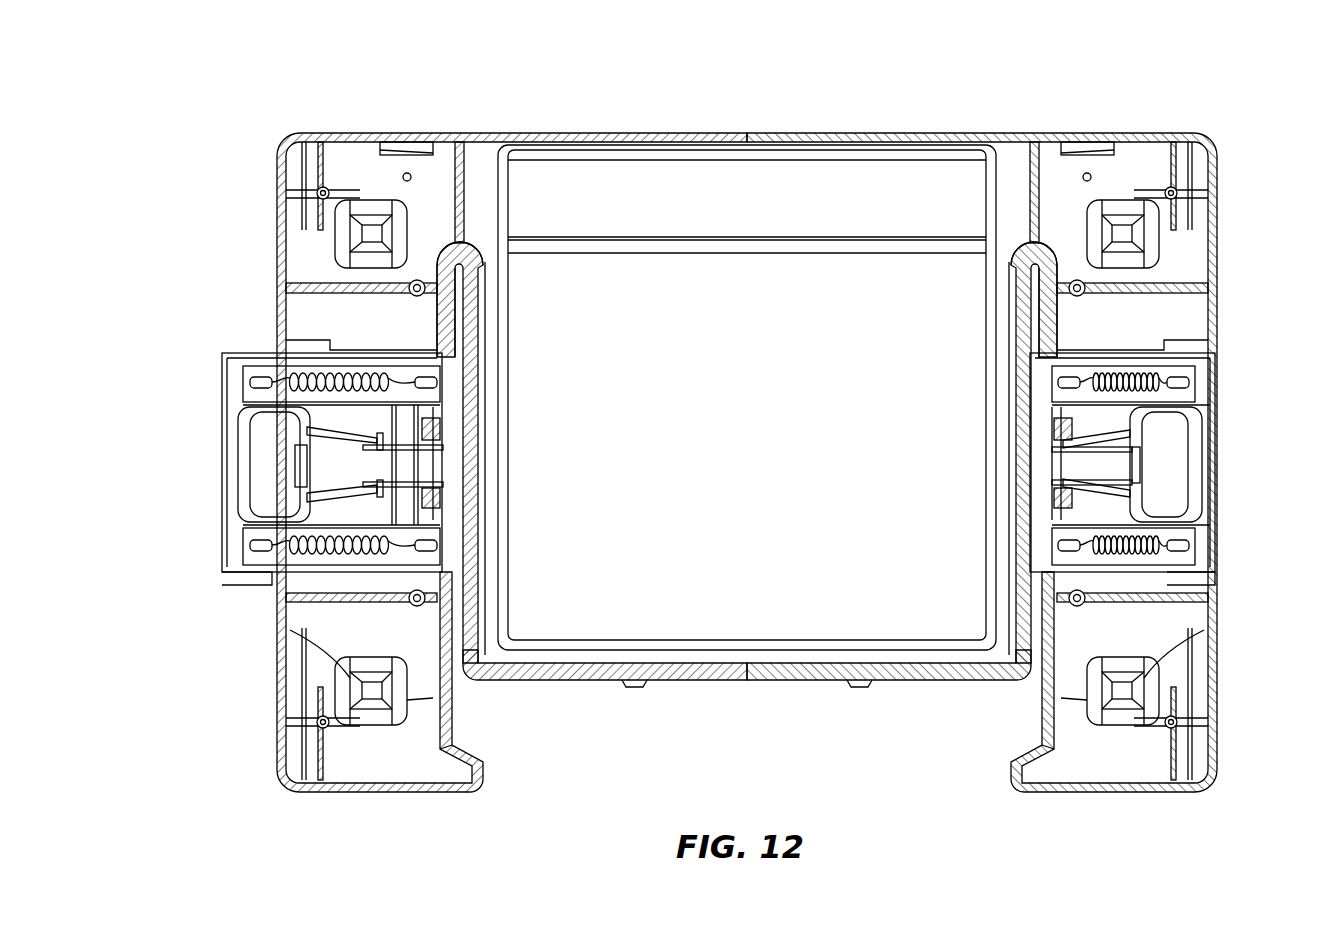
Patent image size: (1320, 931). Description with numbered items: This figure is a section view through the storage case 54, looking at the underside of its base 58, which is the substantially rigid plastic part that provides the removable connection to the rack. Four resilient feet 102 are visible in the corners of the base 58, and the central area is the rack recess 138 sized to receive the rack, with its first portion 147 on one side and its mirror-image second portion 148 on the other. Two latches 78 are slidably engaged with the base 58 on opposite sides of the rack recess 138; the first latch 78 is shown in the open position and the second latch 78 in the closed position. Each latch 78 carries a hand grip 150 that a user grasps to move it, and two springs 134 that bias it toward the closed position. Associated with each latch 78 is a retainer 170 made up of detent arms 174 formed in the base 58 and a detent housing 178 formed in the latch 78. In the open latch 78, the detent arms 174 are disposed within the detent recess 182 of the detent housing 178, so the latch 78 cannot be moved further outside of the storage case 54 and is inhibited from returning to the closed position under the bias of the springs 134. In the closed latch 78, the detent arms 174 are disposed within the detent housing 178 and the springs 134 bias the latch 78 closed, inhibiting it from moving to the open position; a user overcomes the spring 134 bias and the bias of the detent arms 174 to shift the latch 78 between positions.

The storage case 54 is at (824, 70).
The base 58 is at (612, 612).
The latch 78 is at (225, 385).
The resilient feet 102 is at (372, 232).
The spring 134 is at (333, 380).
The rack recess 138 is at (460, 278).
The first portion of the rack recess 147 is at (462, 305).
The second portion of the rack recess 148 is at (1030, 302).
The hand grip 150 is at (272, 447).
The retainer 170 is at (392, 497).
The detent arms 174 is at (398, 447).
The detent housing 178 is at (315, 478).
The detent recess 182 is at (373, 487).